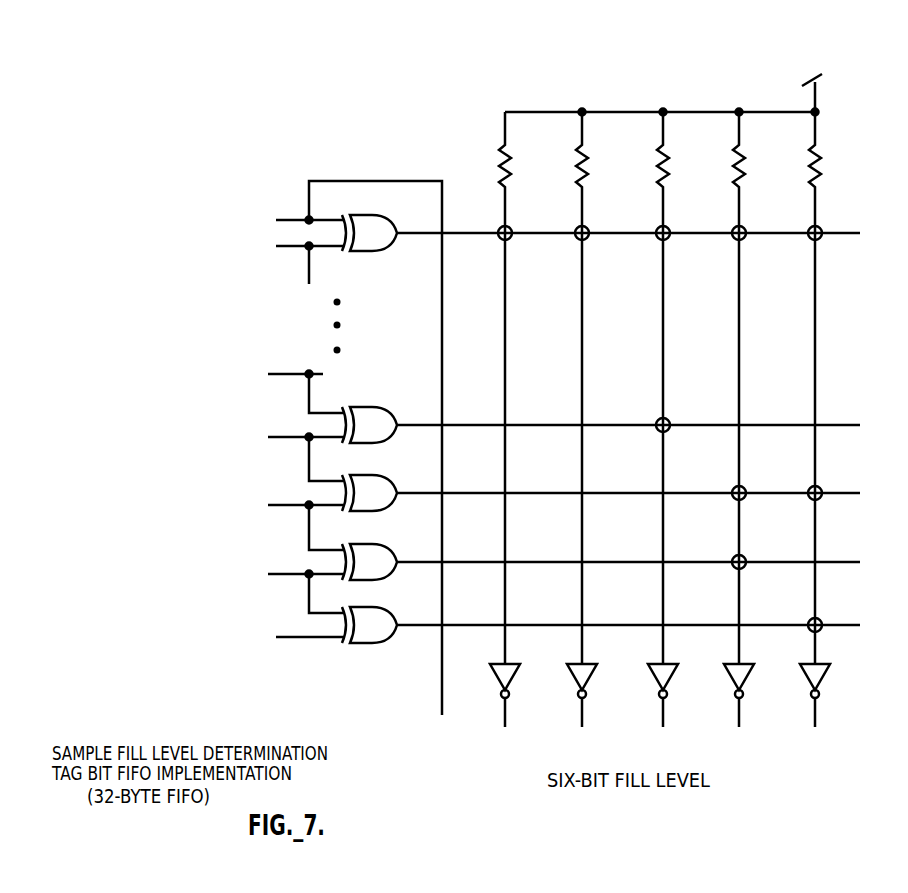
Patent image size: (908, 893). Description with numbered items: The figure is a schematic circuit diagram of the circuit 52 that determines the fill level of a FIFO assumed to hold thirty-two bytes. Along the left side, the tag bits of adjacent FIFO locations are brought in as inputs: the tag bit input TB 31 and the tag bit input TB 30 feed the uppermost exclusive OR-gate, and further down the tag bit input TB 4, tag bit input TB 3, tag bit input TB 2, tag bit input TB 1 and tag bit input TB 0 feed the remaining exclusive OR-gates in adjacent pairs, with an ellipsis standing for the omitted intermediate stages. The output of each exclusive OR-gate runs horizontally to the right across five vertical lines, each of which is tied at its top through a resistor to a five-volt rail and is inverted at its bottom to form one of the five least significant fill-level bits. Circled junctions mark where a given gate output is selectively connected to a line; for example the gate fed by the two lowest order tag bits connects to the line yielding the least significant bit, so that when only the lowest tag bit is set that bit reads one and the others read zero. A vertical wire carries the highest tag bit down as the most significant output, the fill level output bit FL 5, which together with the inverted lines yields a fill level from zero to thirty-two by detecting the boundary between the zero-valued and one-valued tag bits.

The circuit 52 is at (424, 99).
The fill level output bit FL5 5 is at (385, 471).
The tag bit input TB31 31 is at (290, 221).
The tag bit input TB30 30 is at (290, 258).
The tag bit input TB4 4 is at (289, 387).
The tag bit input TB3 3 is at (289, 452).
The tag bit input TB2 2 is at (289, 521).
The tag bit input TB1 1 is at (289, 587).
The tag bit input TB0 0 is at (289, 638).